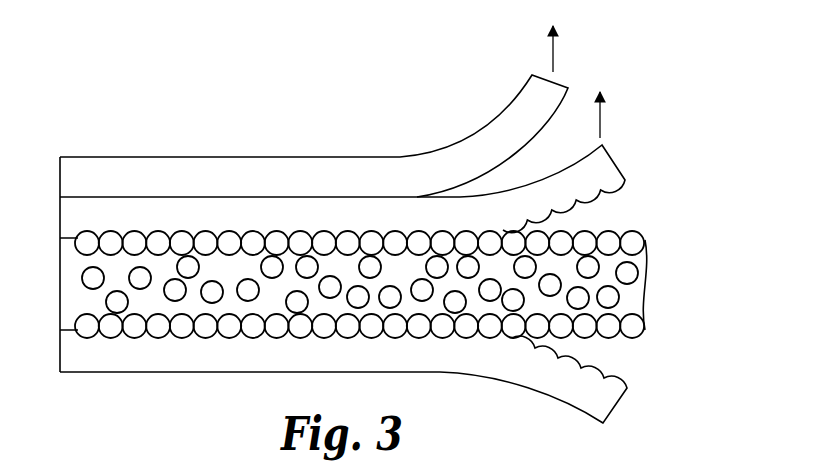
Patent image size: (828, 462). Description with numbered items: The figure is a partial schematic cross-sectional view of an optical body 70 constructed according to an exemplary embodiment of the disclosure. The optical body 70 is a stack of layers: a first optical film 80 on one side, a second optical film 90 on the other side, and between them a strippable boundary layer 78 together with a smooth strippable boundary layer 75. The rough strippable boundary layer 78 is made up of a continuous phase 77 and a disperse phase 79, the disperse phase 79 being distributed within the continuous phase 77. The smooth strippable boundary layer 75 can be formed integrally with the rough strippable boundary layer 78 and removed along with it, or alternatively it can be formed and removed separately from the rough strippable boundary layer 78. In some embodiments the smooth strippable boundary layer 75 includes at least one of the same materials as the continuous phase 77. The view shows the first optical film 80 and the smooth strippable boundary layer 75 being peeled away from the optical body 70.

The optical body 70 is at (128, 128).
The first optical film 80 is at (290, 167).
The smooth strippable boundary layer 75 is at (605, 167).
The strippable boundary layer 78 is at (398, 280).
The continuous phase 77 is at (640, 287).
The disperse phase 79 is at (637, 329).
The second optical film 90 is at (67, 355).